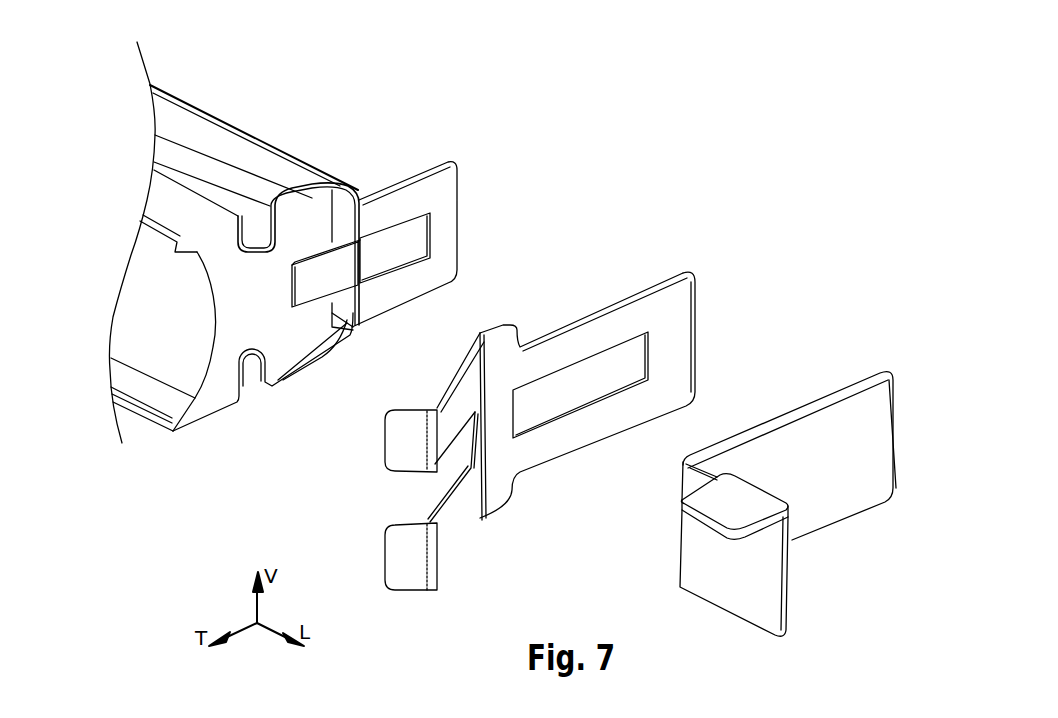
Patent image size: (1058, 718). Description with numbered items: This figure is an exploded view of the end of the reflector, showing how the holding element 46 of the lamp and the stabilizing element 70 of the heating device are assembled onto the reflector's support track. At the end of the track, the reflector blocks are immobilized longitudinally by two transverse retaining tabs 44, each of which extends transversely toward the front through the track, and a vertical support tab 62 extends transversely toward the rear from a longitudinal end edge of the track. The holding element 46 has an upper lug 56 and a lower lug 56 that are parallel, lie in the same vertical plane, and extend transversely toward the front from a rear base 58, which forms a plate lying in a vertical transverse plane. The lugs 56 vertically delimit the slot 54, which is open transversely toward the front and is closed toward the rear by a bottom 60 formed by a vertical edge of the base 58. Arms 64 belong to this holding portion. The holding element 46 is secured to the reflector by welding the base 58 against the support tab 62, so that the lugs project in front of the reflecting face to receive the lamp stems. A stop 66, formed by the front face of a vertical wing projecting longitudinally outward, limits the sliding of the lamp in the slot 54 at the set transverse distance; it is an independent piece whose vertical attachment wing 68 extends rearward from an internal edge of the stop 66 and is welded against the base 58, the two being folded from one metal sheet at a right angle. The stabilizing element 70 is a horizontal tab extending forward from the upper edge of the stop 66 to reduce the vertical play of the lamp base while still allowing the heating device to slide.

The transverse retaining tab 44 is at (317, 282).
The holding element 46 is at (507, 424).
The slot 54 is at (402, 434).
The lug 56 is at (407, 442).
The rear base 58 is at (593, 427).
The bottom 60 is at (471, 468).
The vertical support tab 62 is at (400, 204).
The arm 64 is at (433, 425).
The stop 66 is at (757, 590).
The vertical attachment wing 68 is at (830, 483).
The stabilizing element 70 is at (723, 502).